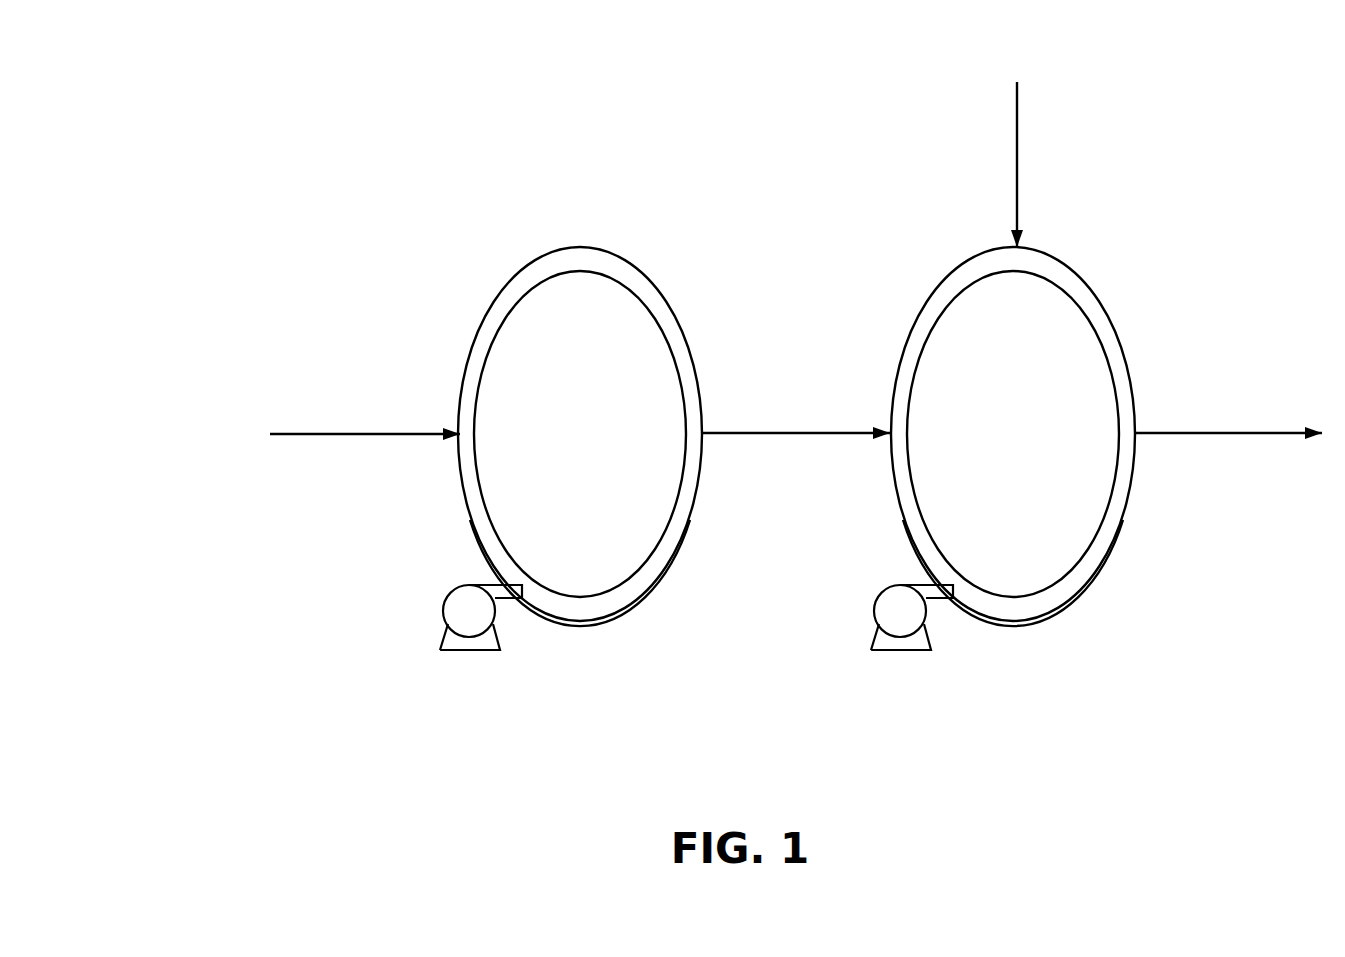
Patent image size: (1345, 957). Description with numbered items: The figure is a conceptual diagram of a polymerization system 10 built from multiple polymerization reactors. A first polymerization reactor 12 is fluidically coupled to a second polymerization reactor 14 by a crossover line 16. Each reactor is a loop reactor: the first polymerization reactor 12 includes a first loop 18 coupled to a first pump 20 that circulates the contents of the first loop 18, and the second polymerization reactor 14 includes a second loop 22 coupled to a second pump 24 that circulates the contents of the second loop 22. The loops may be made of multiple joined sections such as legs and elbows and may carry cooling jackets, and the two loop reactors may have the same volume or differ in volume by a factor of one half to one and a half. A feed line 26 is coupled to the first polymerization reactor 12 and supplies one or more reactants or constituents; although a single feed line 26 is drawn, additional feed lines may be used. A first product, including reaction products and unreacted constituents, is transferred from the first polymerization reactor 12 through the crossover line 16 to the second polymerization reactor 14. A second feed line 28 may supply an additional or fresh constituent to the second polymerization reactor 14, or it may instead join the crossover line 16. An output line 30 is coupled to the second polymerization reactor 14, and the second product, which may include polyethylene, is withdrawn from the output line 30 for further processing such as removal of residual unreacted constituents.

The polymerization system 10 is at (253, 115).
The first polymerization reactor 12 is at (589, 244).
The second polymerization reactor 14 is at (964, 261).
The crossover line 16 is at (790, 432).
The first loop 18 is at (682, 543).
The first pump 20 is at (500, 642).
The second loop 22 is at (1113, 545).
The second pump 24 is at (932, 647).
The feed line 26 is at (375, 430).
The second feed line 28 is at (1017, 133).
The output line 30 is at (1258, 432).